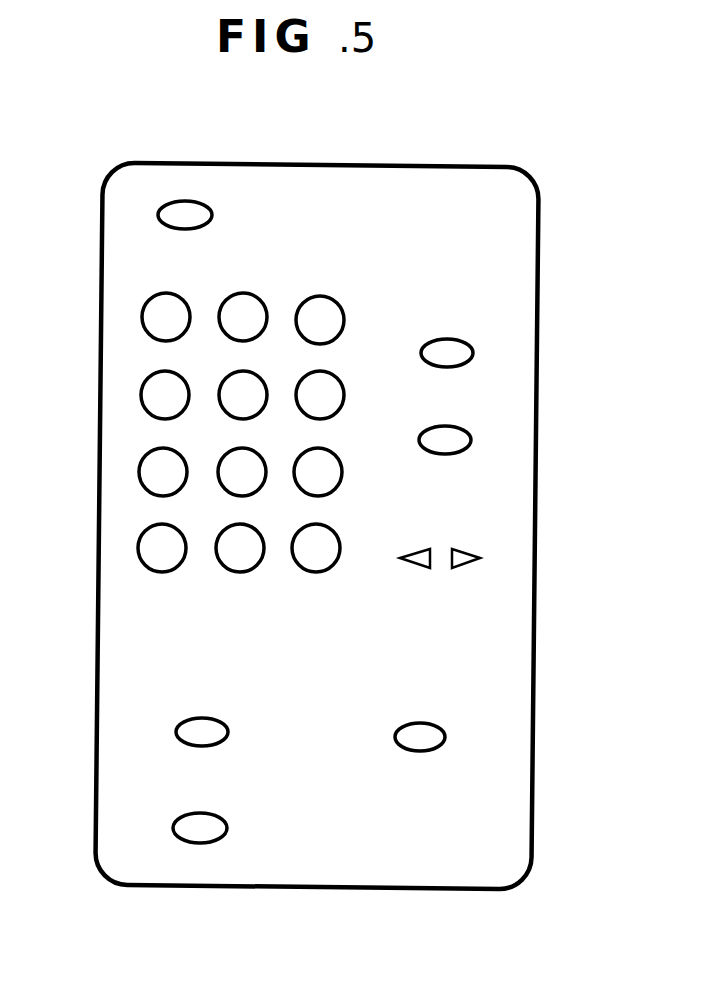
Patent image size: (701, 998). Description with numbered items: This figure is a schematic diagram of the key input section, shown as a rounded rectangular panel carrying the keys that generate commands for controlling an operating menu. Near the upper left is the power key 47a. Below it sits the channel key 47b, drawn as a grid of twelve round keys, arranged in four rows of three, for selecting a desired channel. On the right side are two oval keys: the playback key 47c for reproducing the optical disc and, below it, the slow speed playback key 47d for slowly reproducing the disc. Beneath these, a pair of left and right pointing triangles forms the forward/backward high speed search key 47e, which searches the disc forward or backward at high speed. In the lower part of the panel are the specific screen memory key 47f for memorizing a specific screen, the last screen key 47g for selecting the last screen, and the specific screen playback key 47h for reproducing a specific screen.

The power key 47a is at (158, 209).
The channel key 47b is at (311, 289).
The playback key 47c is at (473, 350).
The slow speed playback key 47d is at (471, 437).
The forward/backward high speed search key 47e is at (482, 549).
The specific screen memory key 47f is at (225, 723).
The last screen key 47g is at (225, 821).
The specific screen playback key 47h is at (434, 724).